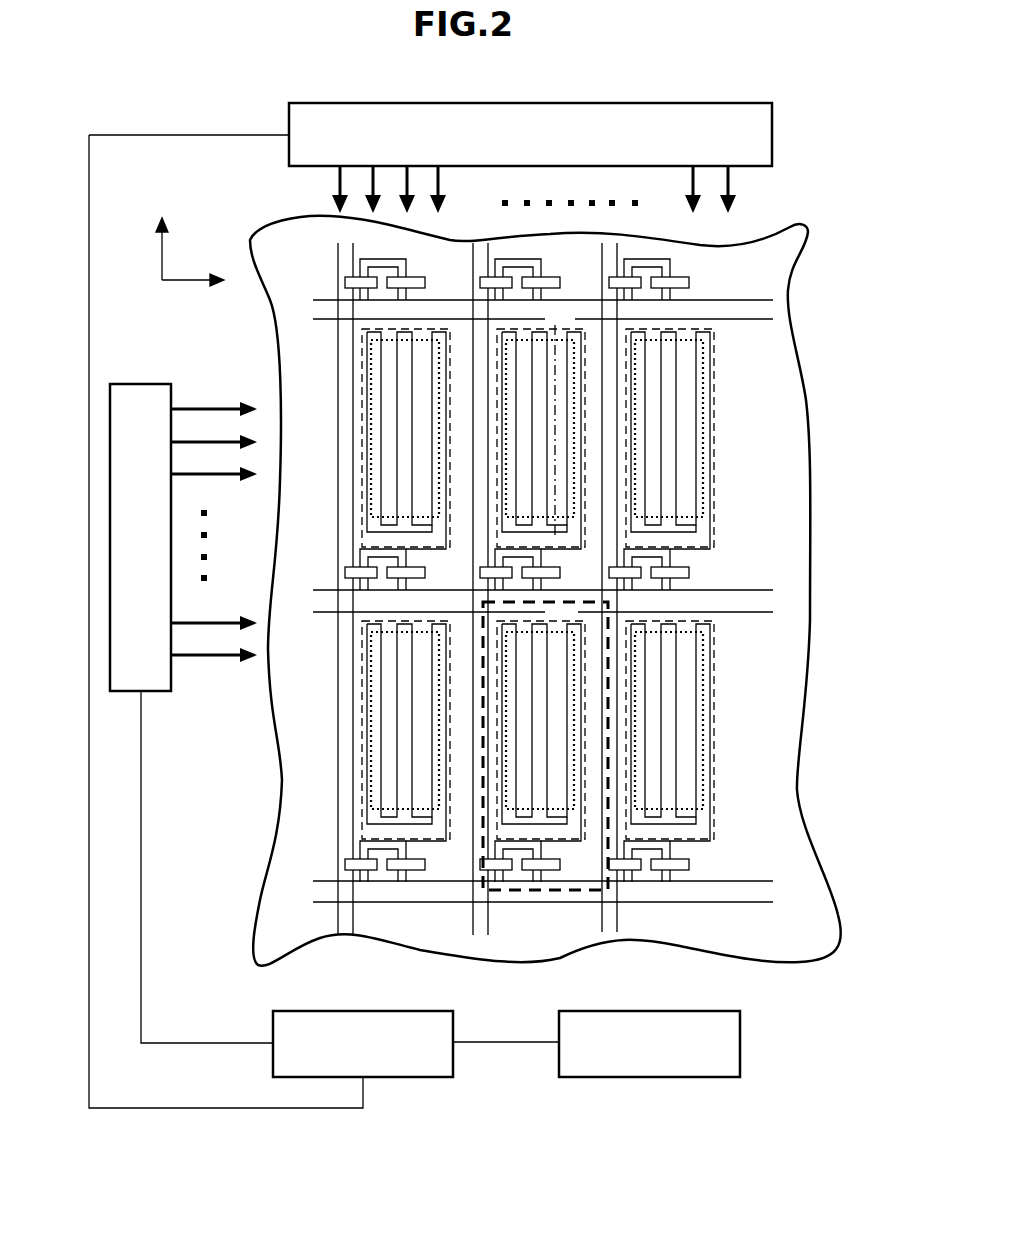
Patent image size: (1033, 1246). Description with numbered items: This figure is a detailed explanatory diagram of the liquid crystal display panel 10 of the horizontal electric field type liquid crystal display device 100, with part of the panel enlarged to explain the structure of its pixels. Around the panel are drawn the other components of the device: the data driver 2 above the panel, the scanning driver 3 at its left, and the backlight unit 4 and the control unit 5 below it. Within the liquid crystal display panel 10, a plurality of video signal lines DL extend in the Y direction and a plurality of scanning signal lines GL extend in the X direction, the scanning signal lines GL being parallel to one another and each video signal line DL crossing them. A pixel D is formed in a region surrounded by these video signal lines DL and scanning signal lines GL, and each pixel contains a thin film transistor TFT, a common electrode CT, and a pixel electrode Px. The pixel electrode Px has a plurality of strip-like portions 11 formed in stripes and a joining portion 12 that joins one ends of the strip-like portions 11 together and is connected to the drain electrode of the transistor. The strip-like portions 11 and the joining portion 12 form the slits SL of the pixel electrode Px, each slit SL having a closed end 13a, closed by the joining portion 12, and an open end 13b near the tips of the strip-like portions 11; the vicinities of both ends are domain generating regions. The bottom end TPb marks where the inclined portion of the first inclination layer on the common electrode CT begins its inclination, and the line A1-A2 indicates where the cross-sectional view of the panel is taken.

The liquid crystal display device 100 is at (266, 113).
The data driver 2 is at (289, 150).
The scanning driver 3 is at (138, 384).
The backlight unit 4 is at (740, 1045).
The control unit 5 is at (405, 1010).
The liquid crystal display panel 10 is at (705, 243).
The strip-like portions 11 is at (361, 470).
The joining portion 12 is at (385, 531).
The closed end 13a is at (690, 518).
The open end 13b is at (694, 457).
The scanning signal lines GL is at (327, 893).
The video signal lines DL is at (547, 935).
The slits SL is at (427, 413).
The bottom end of the inclined portion TPb is at (373, 445).
The pixel electrode Px is at (363, 470).
The common electrode CT is at (355, 513).
The thin film transistor TFT is at (378, 578).
The line A1-A2 end point A1 is at (532, 449).
The line A1-A2 end point A2 is at (532, 741).
The pixel D is at (544, 780).